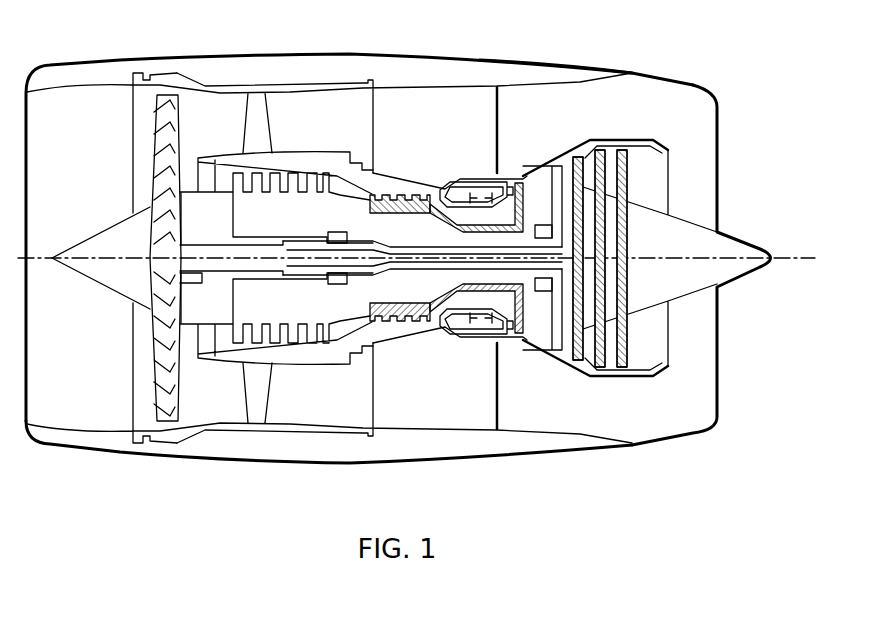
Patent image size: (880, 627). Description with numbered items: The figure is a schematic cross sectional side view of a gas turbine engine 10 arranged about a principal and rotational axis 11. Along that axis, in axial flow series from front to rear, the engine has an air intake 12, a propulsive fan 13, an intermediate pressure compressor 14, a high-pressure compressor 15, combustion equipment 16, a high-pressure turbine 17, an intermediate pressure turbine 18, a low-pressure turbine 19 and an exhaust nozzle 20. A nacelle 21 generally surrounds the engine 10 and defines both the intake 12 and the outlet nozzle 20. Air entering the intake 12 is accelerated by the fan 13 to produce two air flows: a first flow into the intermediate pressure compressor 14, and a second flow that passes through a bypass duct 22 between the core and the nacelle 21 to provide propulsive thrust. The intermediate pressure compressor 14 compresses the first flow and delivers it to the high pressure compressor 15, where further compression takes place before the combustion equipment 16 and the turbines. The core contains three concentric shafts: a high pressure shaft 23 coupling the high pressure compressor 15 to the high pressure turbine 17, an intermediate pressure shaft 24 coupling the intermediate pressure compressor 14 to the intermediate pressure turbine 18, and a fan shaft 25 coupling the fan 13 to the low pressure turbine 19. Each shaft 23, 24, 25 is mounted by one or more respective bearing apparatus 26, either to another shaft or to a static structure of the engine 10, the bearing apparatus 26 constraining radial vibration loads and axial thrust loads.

The gas turbine engine 10 is at (563, 463).
The principal and rotational axis 11 is at (806, 263).
The air intake 12 is at (78, 88).
The propulsive fan 13 is at (155, 383).
The intermediate pressure compressor 14 is at (295, 315).
The high-pressure compressor 15 is at (400, 187).
The combustion equipment 16 is at (487, 190).
The high-pressure turbine 17 is at (518, 346).
The intermediate pressure turbine 18 is at (556, 345).
The low-pressure turbine 19 is at (610, 375).
The exhaust nozzle 20 is at (718, 418).
The nacelle 21 is at (540, 72).
The bypass duct 22 is at (289, 137).
The high pressure shaft 23 is at (445, 295).
The intermediate pressure shaft 24 is at (390, 243).
The fan shaft 25 is at (217, 255).
The bearing apparatus 26 is at (542, 227).